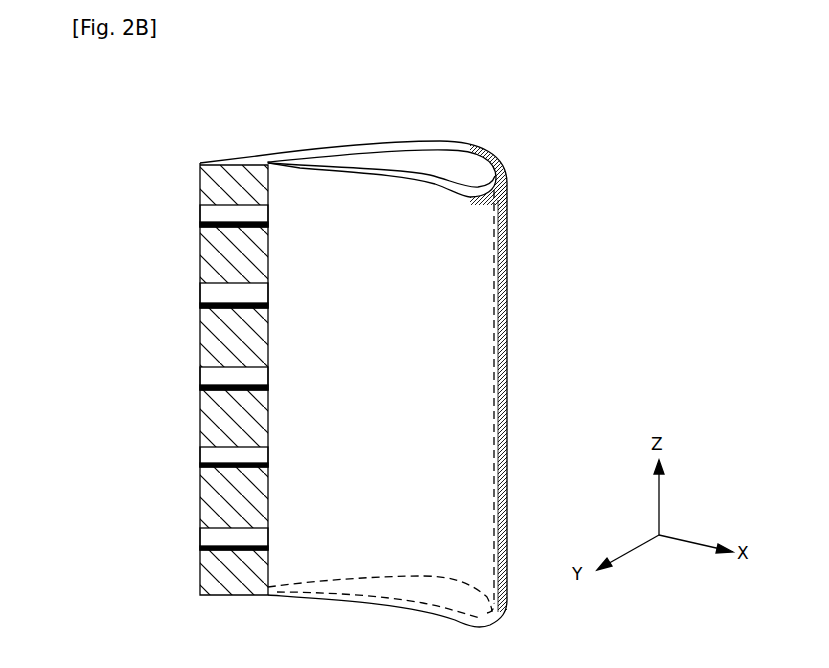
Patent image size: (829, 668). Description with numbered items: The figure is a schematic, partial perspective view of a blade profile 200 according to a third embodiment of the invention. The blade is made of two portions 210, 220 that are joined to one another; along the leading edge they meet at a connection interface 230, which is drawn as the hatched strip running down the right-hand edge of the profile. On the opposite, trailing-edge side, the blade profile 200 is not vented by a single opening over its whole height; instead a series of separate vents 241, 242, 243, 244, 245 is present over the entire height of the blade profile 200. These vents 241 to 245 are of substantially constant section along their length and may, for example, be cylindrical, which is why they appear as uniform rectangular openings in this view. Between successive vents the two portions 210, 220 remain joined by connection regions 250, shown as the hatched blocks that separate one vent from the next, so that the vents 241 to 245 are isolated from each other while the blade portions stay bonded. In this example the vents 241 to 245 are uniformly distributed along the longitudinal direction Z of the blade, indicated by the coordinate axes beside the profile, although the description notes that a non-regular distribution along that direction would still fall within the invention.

The blade profile 200 is at (558, 177).
The portion of the blade 210 is at (392, 142).
The portion of the blade 220 is at (435, 210).
The connection interface 230 is at (507, 366).
The vent 241 is at (215, 212).
The vent 242 is at (215, 292).
The vent 243 is at (215, 376).
The vent 244 is at (215, 454).
The vent 245 is at (215, 536).
The connection region 250 is at (262, 187).